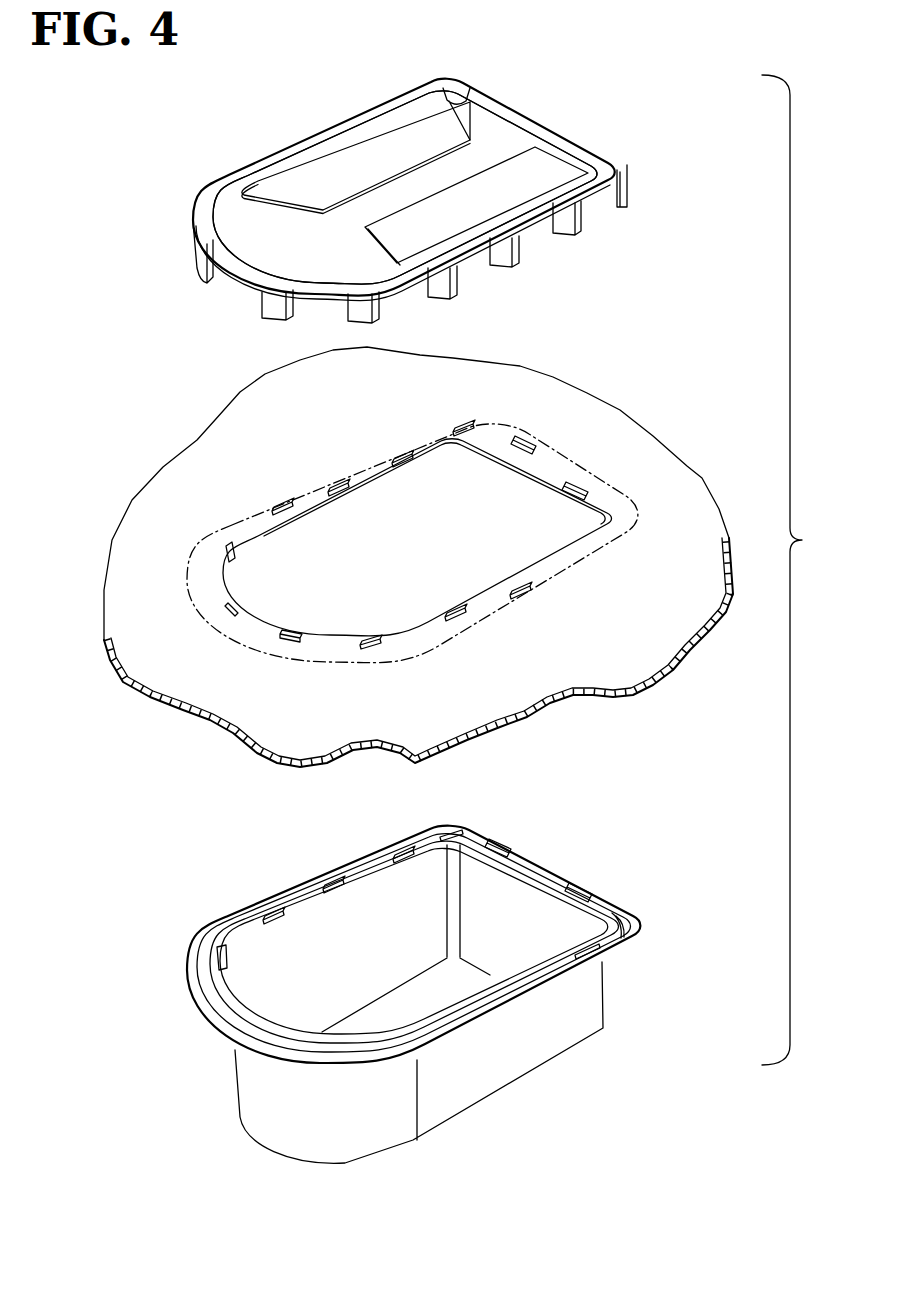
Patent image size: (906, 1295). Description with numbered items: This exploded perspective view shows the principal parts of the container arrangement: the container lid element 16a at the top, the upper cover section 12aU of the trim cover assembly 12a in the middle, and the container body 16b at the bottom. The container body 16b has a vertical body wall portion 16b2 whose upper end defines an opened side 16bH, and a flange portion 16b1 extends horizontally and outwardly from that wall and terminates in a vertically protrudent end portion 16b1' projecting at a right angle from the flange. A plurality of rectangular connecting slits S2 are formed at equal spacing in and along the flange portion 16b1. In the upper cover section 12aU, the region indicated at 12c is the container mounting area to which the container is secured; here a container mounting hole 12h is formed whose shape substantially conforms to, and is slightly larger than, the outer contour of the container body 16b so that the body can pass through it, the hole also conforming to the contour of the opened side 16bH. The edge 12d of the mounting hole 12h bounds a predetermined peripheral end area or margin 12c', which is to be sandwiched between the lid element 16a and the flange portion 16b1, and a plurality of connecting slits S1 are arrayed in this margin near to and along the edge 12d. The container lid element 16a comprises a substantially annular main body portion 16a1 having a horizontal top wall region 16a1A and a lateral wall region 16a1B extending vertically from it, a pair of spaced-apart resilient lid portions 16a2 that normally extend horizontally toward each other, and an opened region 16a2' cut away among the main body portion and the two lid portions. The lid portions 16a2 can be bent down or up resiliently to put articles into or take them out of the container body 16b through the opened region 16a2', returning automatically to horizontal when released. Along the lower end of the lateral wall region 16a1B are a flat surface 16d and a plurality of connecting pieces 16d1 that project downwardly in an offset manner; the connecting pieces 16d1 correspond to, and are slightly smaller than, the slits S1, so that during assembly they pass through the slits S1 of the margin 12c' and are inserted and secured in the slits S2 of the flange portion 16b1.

The container lid element 16a is at (273, 128).
The main body portion 16a1 is at (108, 148).
The top wall region 16a1A is at (206, 188).
The lateral wall region 16a1B is at (193, 218).
The resilient lid portion 16a2 is at (457, 157).
The opened region 16a2' is at (529, 110).
The flat surface 16d is at (504, 240).
The connecting piece 16d1 is at (503, 137).
The trim cover assembly 12a is at (168, 434).
The upper cover section 12aU is at (136, 514).
The panel mounting portion 12c is at (437, 591).
The peripheral end area or margin 12c' is at (434, 523).
The edge of the container mounting hole 12d is at (375, 483).
The container mounting hole 12h is at (512, 540).
The connecting slits S1 is at (282, 504).
The container body 16b is at (593, 860).
The flange portion 16b1 is at (367, 943).
The vertically protrudent end portion 16b1' is at (446, 971).
The opened side 16bH is at (280, 1000).
The vertical body wall portion 16b2 is at (482, 1063).
The connecting slits S2 is at (500, 843).